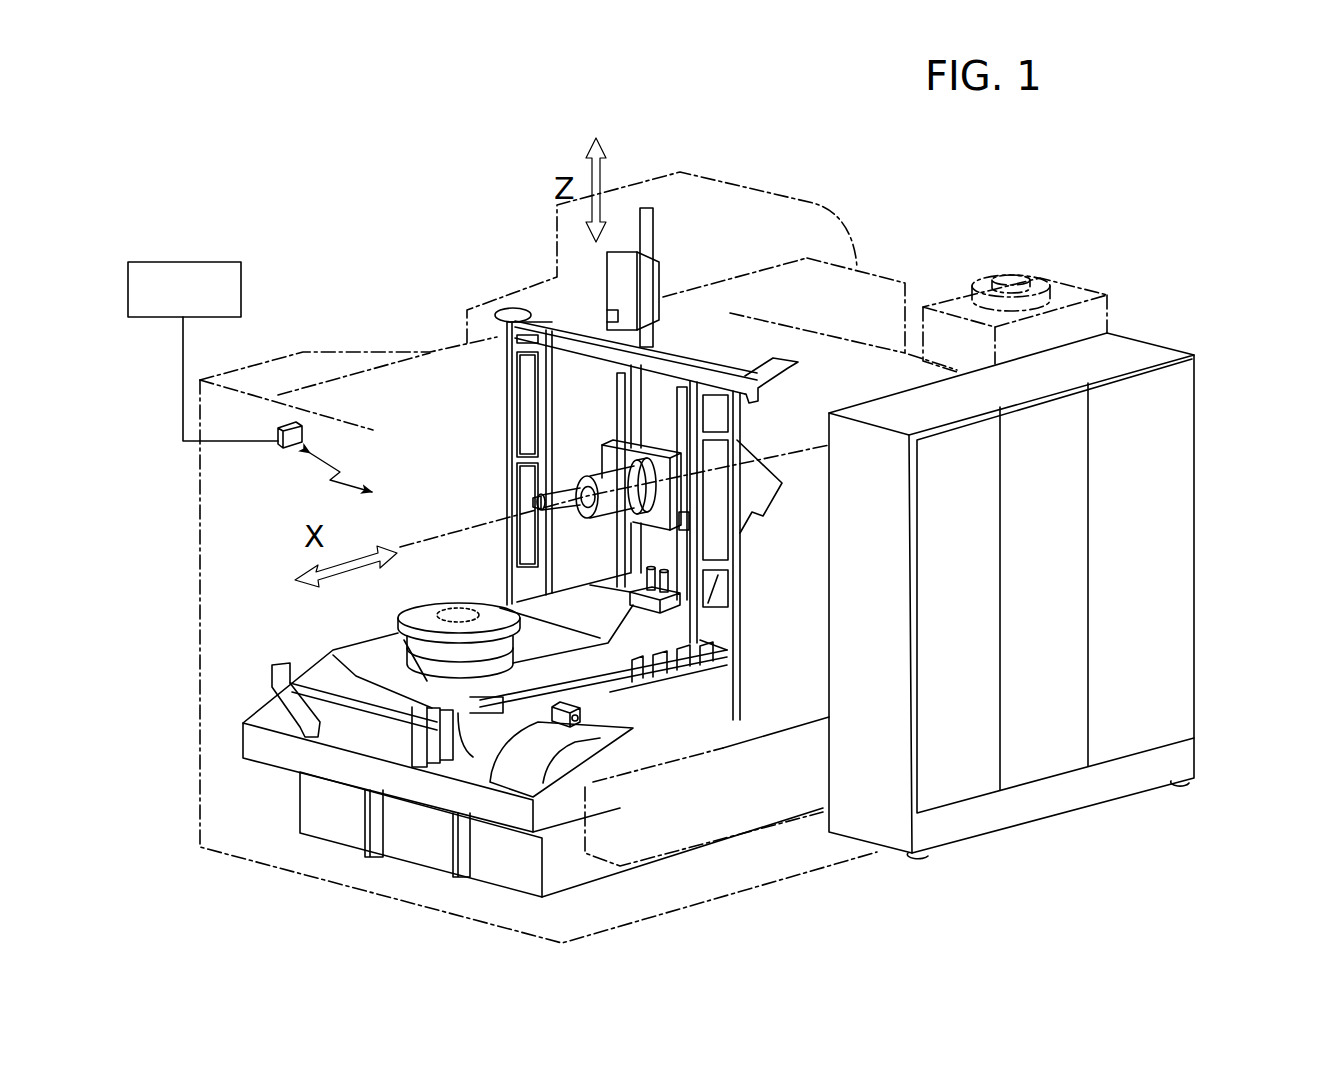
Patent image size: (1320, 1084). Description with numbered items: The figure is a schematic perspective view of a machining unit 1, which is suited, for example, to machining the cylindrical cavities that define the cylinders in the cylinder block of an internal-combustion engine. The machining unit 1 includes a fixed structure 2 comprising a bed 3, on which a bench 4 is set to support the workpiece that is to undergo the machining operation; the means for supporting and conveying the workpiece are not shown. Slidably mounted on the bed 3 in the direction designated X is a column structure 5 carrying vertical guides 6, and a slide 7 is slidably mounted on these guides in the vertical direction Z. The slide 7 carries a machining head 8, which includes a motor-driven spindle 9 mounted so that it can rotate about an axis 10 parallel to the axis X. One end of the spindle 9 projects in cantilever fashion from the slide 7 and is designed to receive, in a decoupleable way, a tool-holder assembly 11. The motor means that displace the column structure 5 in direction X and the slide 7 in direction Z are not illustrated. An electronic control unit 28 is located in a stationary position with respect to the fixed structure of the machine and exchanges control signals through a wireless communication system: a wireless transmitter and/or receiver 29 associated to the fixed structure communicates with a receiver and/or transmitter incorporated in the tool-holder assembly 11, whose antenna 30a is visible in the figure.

The machining unit 1 is at (1135, 282).
The fixed structure 2 is at (1215, 522).
The bed 3 is at (330, 806).
The bench 4 is at (420, 614).
The column structure 5 is at (698, 413).
The vertical guides 6 is at (677, 423).
The slide 7 is at (608, 453).
The machining head 8 is at (603, 522).
The motor-driven spindle 9 is at (576, 480).
The axis 10 is at (450, 540).
The tool-holder assembly 11 is at (537, 506).
The electronic control unit 28 is at (242, 279).
The wireless transmitter and/or receiver 29 is at (290, 418).
The antenna 30a is at (570, 492).